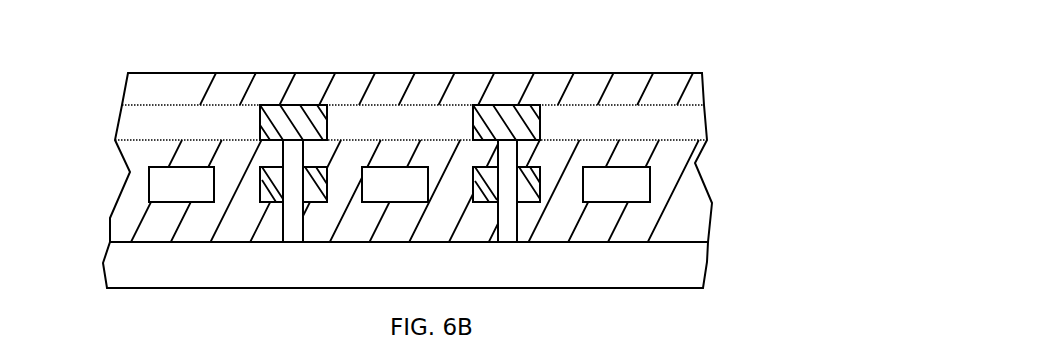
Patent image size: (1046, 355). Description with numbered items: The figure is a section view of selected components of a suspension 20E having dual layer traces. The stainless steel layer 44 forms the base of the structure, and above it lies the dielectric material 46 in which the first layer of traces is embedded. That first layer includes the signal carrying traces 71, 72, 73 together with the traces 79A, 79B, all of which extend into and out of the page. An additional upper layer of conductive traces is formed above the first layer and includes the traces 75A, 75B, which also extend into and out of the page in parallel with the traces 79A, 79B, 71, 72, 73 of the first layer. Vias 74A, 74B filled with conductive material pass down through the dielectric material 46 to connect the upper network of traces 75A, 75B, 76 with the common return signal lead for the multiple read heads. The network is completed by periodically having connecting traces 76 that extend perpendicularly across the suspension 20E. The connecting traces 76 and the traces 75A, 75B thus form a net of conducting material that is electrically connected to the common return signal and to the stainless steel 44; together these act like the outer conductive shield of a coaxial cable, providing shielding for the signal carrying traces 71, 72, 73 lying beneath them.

The suspension 20E is at (112, 74).
The stainless steel layer 44 is at (697, 262).
The dielectric material 46 is at (695, 170).
The trace 71 is at (171, 219).
The trace 72 is at (397, 203).
The trace 73 is at (607, 203).
The via 74A is at (291, 235).
The via 74B is at (507, 238).
The upper layer conductive trace 75A is at (310, 112).
The upper layer conductive trace 75B is at (500, 112).
The connecting trace 76 is at (217, 115).
The trace 79A is at (257, 200).
The trace 79B is at (487, 203).